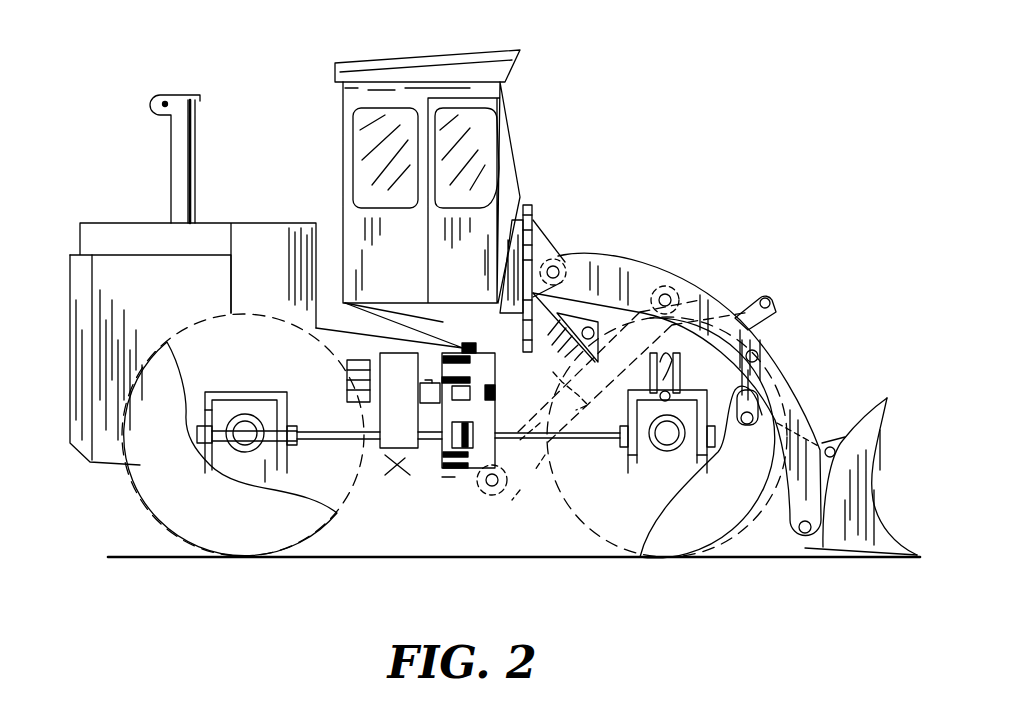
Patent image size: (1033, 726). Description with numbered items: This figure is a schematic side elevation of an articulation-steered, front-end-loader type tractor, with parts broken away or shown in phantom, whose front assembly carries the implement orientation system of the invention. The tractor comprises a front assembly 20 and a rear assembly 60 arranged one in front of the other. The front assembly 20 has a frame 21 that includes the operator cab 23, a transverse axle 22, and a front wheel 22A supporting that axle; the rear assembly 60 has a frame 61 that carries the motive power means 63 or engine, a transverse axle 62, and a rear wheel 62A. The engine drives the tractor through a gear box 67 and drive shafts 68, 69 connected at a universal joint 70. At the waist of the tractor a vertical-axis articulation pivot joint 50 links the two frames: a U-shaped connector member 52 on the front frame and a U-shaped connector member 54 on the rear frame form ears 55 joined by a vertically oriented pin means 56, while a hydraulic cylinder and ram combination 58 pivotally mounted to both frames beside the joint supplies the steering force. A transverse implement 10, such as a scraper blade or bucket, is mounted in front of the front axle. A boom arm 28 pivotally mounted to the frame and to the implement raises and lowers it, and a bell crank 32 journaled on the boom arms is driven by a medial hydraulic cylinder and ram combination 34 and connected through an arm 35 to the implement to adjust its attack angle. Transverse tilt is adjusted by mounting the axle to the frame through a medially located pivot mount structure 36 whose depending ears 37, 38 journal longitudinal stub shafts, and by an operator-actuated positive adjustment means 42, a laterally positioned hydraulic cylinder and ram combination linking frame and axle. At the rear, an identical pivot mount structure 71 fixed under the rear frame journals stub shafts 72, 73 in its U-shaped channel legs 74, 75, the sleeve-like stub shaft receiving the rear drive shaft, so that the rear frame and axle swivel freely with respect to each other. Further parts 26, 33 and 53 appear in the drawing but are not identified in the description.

The transverse implement 10 is at (868, 532).
The front assembly 20 is at (597, 218).
The frame 21 is at (480, 269).
The transverse axle 22 is at (668, 440).
The front wheel 22A is at (738, 525).
The cab 23 is at (483, 125).
The mounting post 26 is at (555, 370).
The boom arm 28 is at (633, 268).
The bell crank 32 is at (774, 308).
The pin 33 is at (758, 356).
The hydraulic cylinder and ram combination 34 is at (692, 296).
The arm 35 is at (765, 432).
The pivot mount structure 36 is at (688, 390).
The ear 37 is at (700, 476).
The ear 38 is at (632, 475).
The operator-actuated positive adjustment means 42 is at (655, 378).
The articulation pivot joint 50 is at (462, 490).
The U-shaped connector member 52 is at (490, 423).
The pin 53 is at (462, 462).
The U-shaped connector member 54 is at (405, 466).
The ears 55 is at (447, 477).
The pin means 56 is at (462, 347).
The hydraulic cylinder and ram combination 58 is at (457, 393).
The rear assembly 60 is at (228, 215).
The frame 61 is at (280, 279).
The transverse axle 62 is at (245, 442).
The rear wheel 62A is at (160, 505).
The motive power means 63 is at (126, 311).
The gear box 67 is at (383, 386).
The drive shaft 68 is at (318, 430).
The drive shaft 69 is at (590, 440).
The universal joint 70 is at (455, 416).
The pivot mount structure 71 is at (240, 398).
The stub shaft 72 is at (200, 437).
The stub shaft 73 is at (293, 447).
The U-shaped channel leg 74 is at (210, 410).
The U-shaped channel leg 75 is at (272, 480).